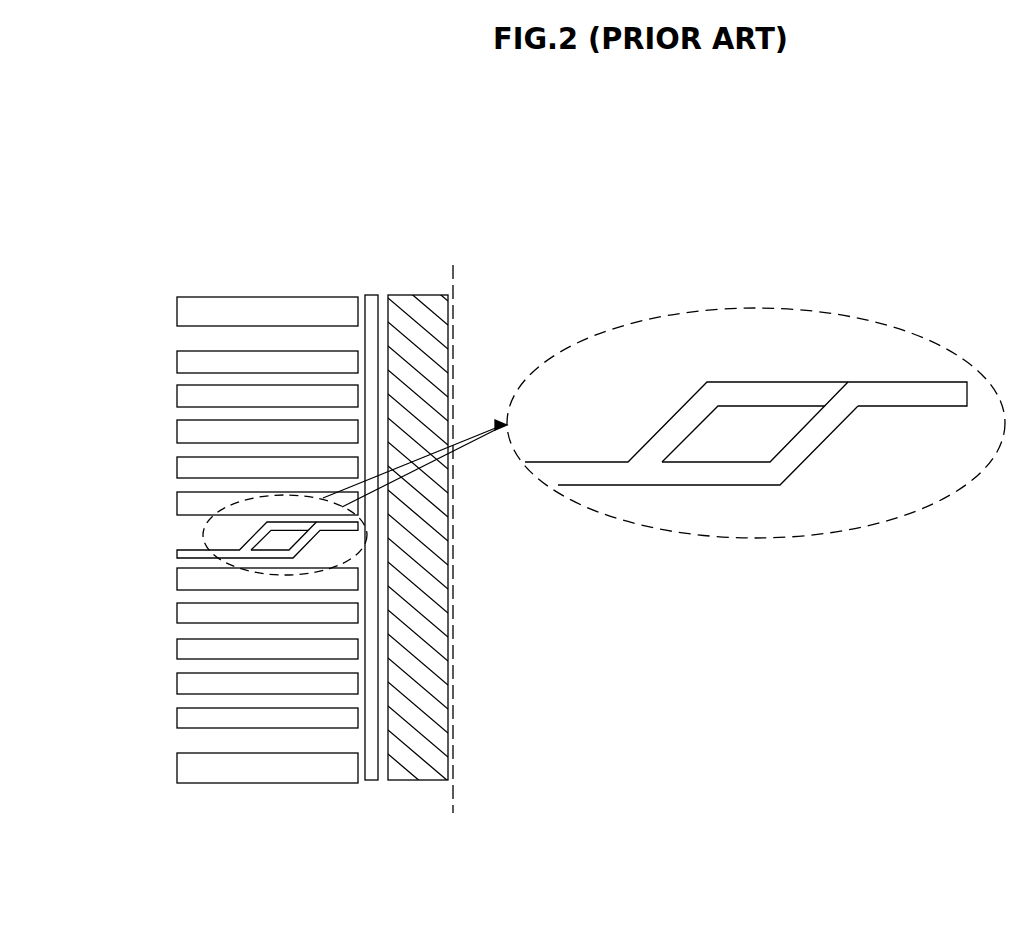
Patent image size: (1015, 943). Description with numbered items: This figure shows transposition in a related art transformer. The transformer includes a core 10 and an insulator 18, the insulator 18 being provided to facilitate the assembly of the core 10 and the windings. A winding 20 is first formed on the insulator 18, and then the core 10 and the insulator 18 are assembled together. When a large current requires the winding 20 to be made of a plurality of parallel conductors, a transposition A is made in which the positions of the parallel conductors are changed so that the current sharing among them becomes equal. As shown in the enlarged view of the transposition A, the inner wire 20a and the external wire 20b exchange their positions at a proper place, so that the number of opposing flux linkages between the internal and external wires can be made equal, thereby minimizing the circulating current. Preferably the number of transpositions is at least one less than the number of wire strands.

The core 10 is at (418, 295).
The insulator 18 is at (371, 295).
The winding 20 is at (262, 297).
The inner wire 20a is at (770, 382).
The external wire 20b is at (822, 442).
The transposition A is at (202, 541).